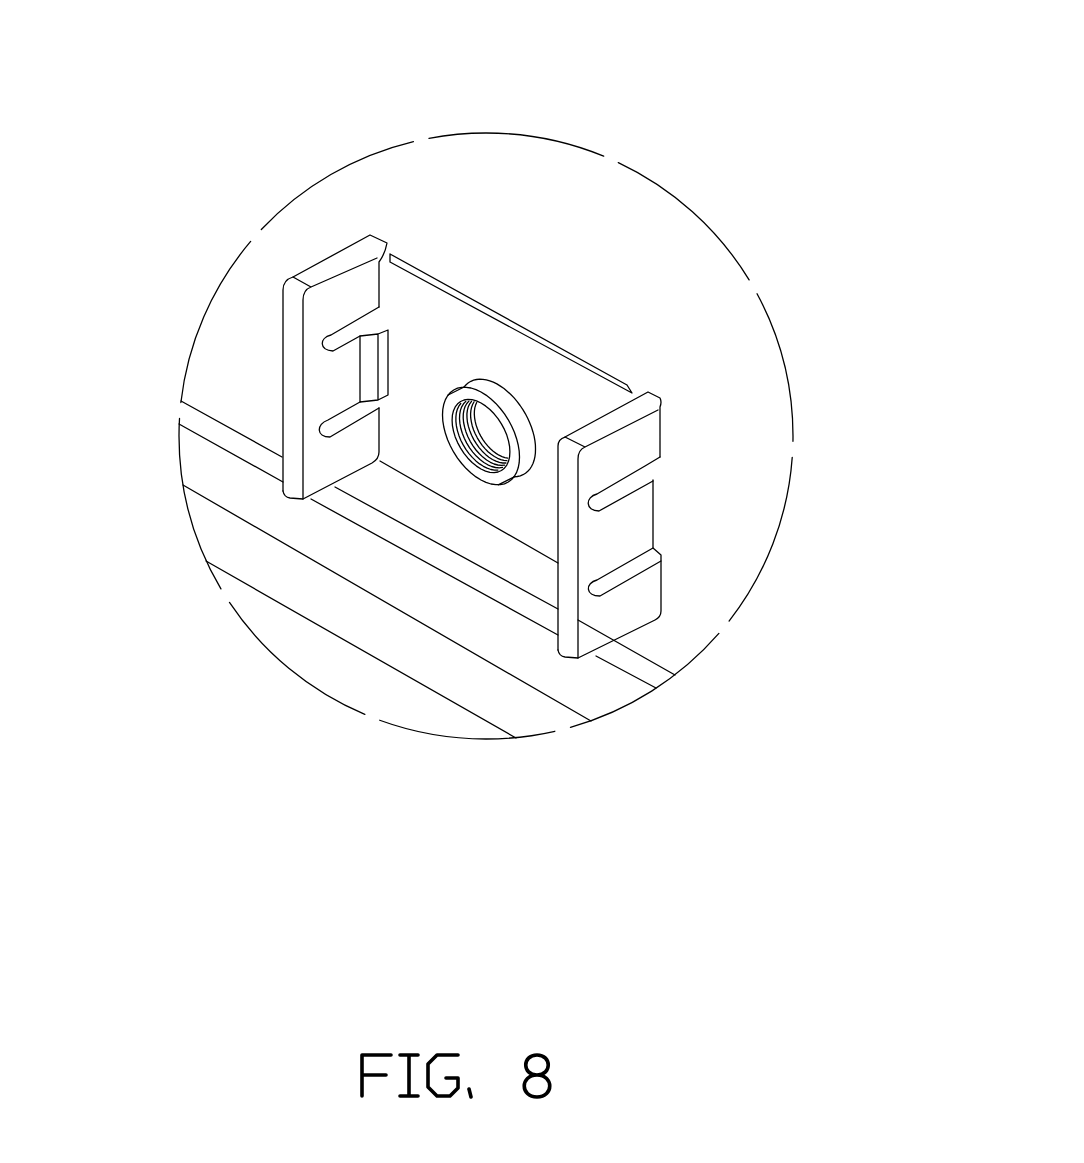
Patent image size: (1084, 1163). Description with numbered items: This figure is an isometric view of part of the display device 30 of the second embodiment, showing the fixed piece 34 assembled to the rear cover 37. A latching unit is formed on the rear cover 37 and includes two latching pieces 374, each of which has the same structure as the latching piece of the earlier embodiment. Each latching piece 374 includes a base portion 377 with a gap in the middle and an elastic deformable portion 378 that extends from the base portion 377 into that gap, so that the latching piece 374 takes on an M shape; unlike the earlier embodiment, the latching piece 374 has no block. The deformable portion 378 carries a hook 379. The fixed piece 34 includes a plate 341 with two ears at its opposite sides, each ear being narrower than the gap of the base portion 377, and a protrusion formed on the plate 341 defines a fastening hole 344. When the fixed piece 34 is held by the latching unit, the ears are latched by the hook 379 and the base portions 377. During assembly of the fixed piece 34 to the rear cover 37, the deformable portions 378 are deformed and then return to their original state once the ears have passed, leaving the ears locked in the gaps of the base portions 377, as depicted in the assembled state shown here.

The display device 30 is at (545, 52).
The fixed piece 34 is at (643, 348).
The plate 341 is at (433, 333).
The fastening hole 344 is at (487, 442).
The rear cover 37 is at (730, 450).
The latching piece 374 is at (680, 520).
The base portion 377 is at (234, 360).
The elastic deformable portion 378 is at (316, 372).
The hook 379 is at (385, 355).